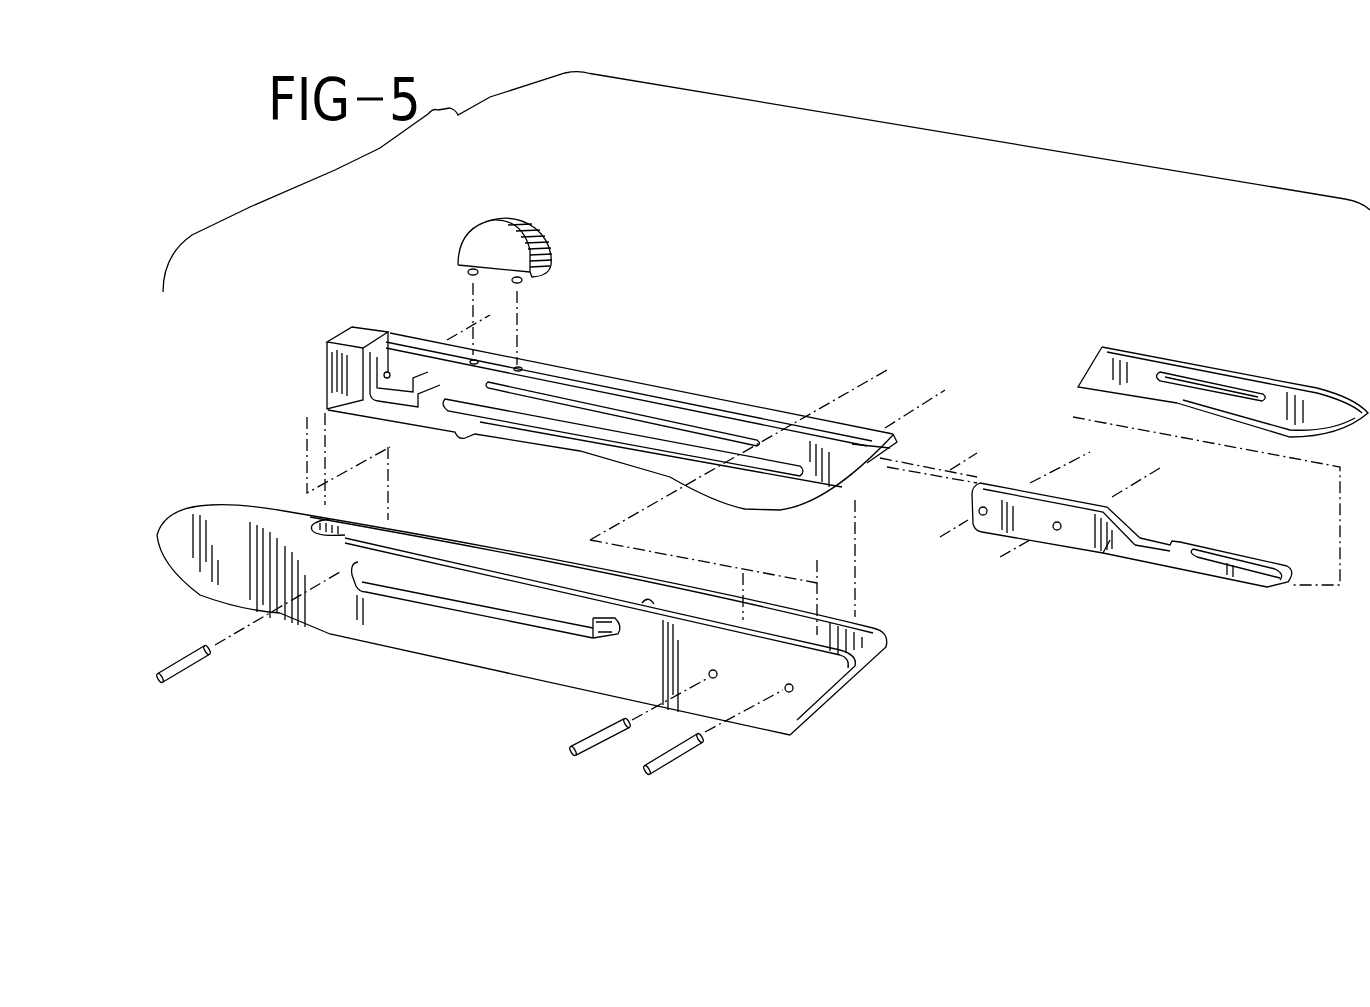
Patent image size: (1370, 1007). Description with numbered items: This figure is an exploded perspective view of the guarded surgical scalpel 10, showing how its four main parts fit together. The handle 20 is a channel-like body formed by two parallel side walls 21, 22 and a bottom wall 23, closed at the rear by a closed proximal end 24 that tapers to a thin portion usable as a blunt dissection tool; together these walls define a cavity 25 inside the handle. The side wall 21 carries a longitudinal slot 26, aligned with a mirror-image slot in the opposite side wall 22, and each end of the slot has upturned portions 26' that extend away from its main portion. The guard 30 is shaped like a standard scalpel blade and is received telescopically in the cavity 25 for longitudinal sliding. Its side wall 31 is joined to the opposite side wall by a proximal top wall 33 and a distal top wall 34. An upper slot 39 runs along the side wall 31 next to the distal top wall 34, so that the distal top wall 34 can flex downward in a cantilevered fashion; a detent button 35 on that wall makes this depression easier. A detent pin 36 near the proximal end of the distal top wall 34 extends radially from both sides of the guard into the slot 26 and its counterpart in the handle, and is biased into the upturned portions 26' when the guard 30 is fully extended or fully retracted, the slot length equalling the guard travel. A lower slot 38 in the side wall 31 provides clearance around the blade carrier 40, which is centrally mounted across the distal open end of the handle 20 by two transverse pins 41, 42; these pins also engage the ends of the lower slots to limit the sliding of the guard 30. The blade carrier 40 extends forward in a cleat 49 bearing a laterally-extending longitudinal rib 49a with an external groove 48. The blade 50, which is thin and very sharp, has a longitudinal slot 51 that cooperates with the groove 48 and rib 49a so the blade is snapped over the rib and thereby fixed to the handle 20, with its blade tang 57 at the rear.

The guarded surgical scalpel 10 is at (850, 280).
The handle 20 is at (435, 655).
The side wall 21 is at (507, 653).
The side wall 22 is at (562, 562).
The bottom wall 23 is at (828, 707).
The closed proximal end 24 is at (213, 532).
The cavity 25 is at (470, 547).
The slot 26 is at (466, 629).
The upturned portions 26' is at (386, 651).
The guard 30 is at (718, 400).
The side wall 31 is at (800, 457).
The proximal top wall 33 is at (363, 328).
The distal top wall 34 is at (634, 388).
The detent button 35 is at (517, 217).
The detent pin 36 is at (187, 668).
The lower slot 38 is at (648, 447).
The upper slot 39 is at (558, 400).
The blade carrier 40 is at (1090, 537).
The transverse pin 41 is at (573, 755).
The transverse pin 42 is at (687, 750).
The external groove 48 is at (1290, 577).
The cleat 49 is at (1200, 570).
The laterally-extending longitudinal rib 49a is at (1227, 555).
The blade 50 is at (1310, 388).
The longitudinal slot 51 is at (1175, 365).
The blade tang 57 is at (1103, 347).